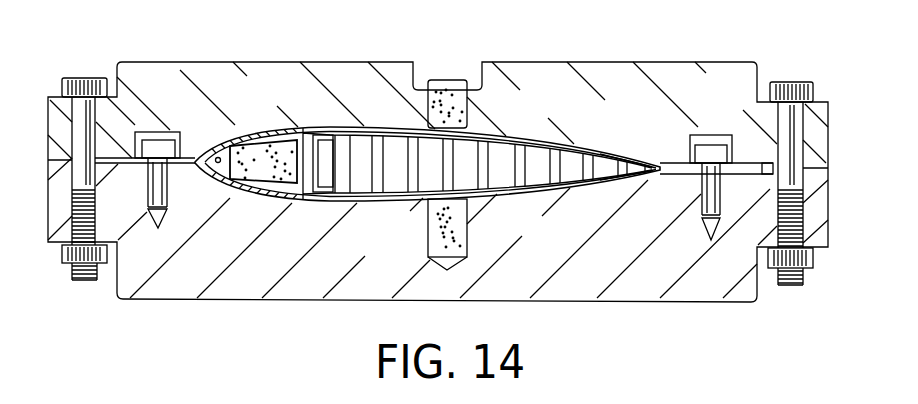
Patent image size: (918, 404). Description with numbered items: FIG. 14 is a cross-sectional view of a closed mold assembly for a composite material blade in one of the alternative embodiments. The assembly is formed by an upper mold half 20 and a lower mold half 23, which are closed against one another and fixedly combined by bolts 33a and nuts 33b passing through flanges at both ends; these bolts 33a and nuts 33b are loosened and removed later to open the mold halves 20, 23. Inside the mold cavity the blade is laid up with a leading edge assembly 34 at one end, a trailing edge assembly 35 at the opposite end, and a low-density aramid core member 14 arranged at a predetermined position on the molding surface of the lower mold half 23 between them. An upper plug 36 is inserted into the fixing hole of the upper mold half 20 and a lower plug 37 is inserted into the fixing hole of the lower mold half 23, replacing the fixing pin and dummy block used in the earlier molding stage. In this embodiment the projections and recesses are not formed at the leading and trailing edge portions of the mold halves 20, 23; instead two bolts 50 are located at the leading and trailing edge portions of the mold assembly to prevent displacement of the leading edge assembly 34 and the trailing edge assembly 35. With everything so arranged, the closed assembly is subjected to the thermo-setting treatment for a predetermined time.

The aramid core member 14 is at (427, 170).
The upper mold half 20 is at (682, 73).
The lower mold half 23 is at (655, 296).
The bolts 33a is at (82, 77).
The nuts 33b is at (63, 262).
The leading edge assembly 34 is at (257, 128).
The trailing edge assembly 35 is at (637, 153).
The upper plug 36 is at (466, 114).
The lower plug 37 is at (466, 211).
The bolts 50 is at (158, 132).